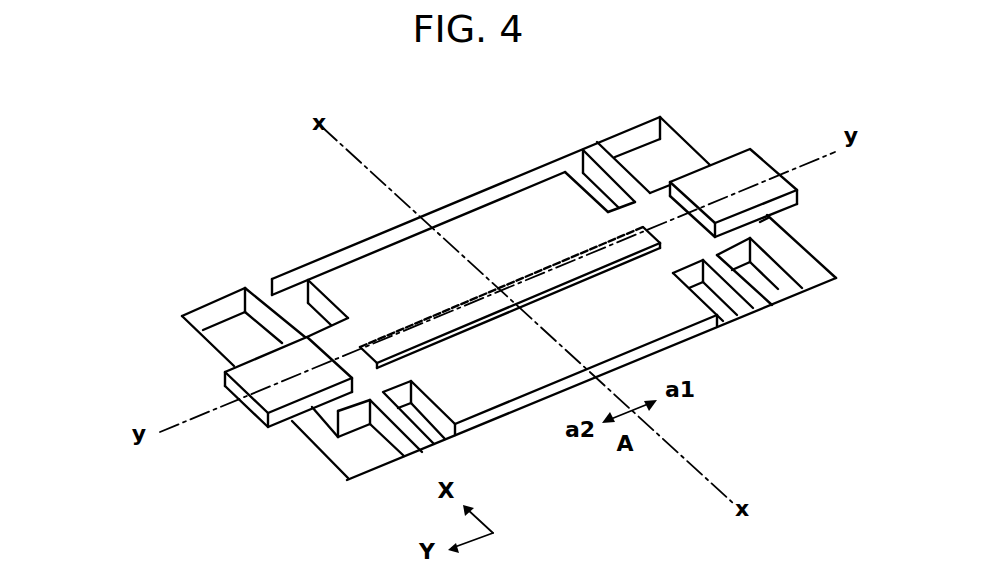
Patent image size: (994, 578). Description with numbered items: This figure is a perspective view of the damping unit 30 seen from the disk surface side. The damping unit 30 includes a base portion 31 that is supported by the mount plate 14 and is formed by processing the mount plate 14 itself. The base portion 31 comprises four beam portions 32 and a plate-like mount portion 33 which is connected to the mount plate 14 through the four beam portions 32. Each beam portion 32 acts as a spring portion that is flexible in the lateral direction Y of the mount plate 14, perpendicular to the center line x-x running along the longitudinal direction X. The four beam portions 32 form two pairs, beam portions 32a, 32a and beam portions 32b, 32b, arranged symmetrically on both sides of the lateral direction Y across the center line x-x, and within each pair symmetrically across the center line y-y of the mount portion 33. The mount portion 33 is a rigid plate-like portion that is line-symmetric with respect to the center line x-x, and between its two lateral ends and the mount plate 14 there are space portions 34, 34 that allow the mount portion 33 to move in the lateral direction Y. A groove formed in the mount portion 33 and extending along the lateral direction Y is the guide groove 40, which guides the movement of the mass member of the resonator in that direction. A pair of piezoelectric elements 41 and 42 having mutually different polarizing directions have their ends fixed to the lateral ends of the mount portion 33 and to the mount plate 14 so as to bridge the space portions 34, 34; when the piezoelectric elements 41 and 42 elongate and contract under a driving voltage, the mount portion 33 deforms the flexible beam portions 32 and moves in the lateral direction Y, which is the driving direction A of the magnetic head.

The damping unit 30 is at (140, 130).
The base portion 31 is at (393, 270).
The mount portion 33 is at (497, 217).
The mount plate 14 is at (180, 352).
The beam portions 32 is at (495, 301).
The beam portions 32a is at (603, 152).
The beam portions 32b is at (277, 306).
The space portions 34 is at (318, 426).
The guide groove 40 is at (592, 260).
The piezoelectric element 41 is at (745, 176).
The piezoelectric element 42 is at (250, 370).